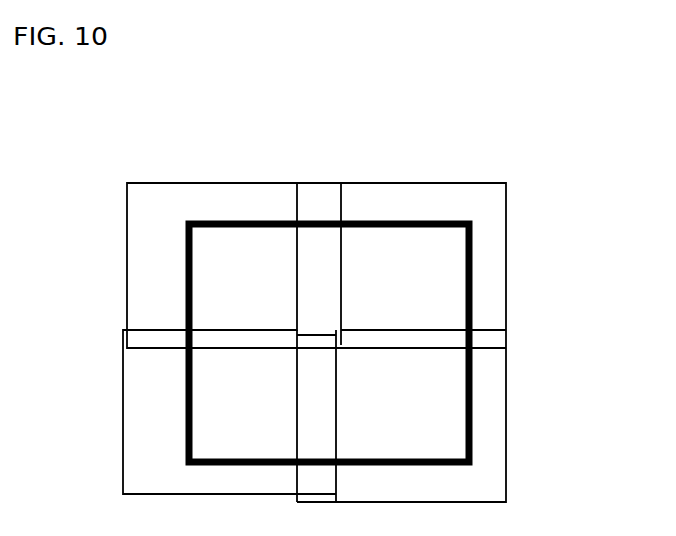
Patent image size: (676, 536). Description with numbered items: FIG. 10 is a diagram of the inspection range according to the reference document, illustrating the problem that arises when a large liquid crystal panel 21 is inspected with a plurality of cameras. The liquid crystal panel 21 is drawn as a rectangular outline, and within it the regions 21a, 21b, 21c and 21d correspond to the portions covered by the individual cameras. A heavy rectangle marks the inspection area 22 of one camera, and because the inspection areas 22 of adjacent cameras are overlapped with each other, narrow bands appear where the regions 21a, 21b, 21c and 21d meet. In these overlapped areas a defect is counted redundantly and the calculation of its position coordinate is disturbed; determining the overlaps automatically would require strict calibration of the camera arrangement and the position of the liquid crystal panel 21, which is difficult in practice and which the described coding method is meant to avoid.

The liquid crystal panel 21 is at (506, 191).
The first shielding film portion 21a is at (162, 190).
The second shielding film portion 21b is at (398, 192).
The third shielding film portion 21c is at (455, 425).
The fourth shielding film portion 21d is at (137, 464).
The inspection area 22 is at (186, 254).